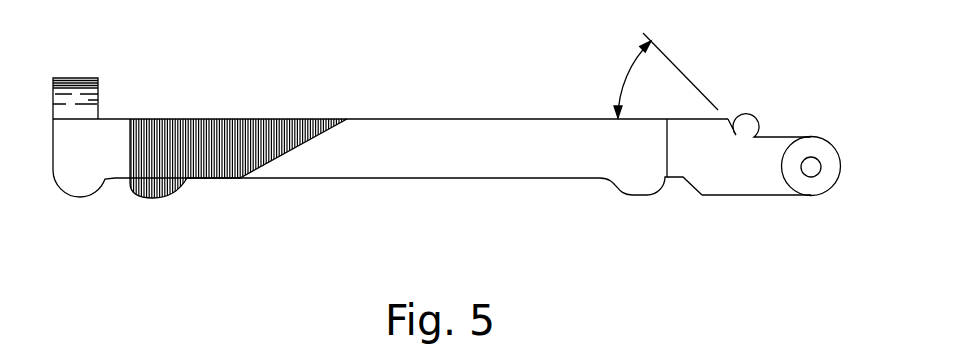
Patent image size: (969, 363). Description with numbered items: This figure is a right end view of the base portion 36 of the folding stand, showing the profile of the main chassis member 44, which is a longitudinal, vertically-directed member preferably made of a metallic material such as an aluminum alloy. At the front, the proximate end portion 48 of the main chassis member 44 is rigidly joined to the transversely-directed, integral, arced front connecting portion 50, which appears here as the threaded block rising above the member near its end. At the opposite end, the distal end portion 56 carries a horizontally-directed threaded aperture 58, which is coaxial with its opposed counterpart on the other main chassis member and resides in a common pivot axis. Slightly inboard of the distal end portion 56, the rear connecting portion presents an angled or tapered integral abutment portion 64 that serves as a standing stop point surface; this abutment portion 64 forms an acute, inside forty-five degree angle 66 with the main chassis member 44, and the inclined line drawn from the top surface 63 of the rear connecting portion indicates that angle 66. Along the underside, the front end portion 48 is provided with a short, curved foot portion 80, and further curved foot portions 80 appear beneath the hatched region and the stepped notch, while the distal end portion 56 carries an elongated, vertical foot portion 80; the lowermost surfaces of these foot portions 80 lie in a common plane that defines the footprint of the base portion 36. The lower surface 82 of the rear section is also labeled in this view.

The base portion 36 is at (455, 149).
The main chassis member 44 is at (390, 140).
The front end portion 48 is at (63, 153).
The front connecting portion 50 is at (92, 103).
The distal end portion 56 is at (817, 185).
The threaded aperture 58 is at (803, 153).
The top surface 63 is at (690, 118).
The angled abutment portion 64 is at (757, 137).
The acute angle 66 is at (624, 80).
The foot portion 80 is at (80, 197).
The lower surface 82 is at (763, 195).